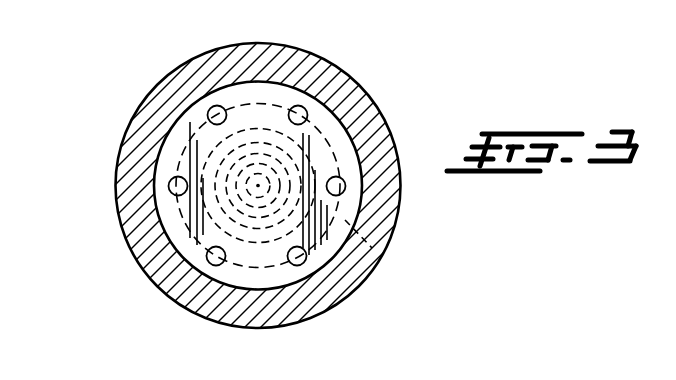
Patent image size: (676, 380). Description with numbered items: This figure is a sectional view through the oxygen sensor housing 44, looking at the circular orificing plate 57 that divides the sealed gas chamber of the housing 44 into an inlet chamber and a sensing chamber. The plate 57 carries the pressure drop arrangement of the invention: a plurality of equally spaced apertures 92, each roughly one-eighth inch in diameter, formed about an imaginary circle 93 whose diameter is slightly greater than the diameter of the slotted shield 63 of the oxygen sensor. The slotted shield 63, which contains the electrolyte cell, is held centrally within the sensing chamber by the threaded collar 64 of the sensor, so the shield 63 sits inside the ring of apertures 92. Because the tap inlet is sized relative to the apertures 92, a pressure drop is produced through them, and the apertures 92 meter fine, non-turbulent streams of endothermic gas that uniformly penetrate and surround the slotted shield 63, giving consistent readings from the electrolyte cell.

The sensor housing 44 is at (303, 50).
The orificing plate 57 is at (331, 128).
The slotted shield 63 is at (131, 259).
The threaded collar 64 is at (244, 112).
The apertures 92 is at (340, 189).
The imaginary circle 93 is at (381, 254).